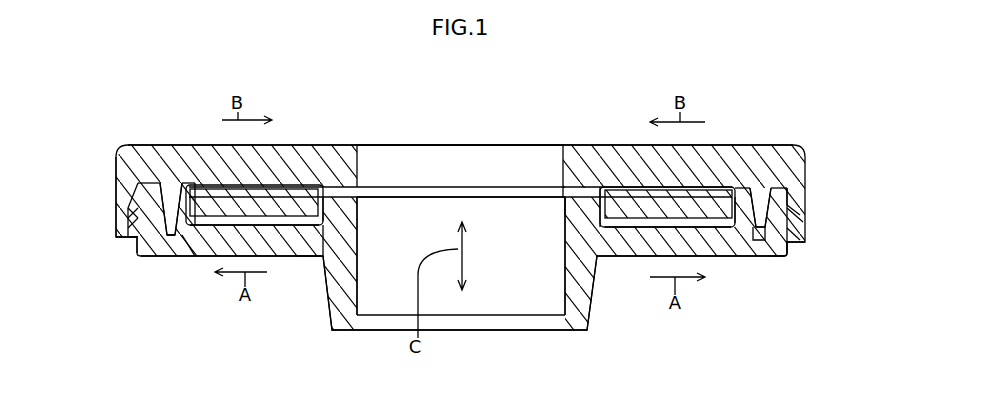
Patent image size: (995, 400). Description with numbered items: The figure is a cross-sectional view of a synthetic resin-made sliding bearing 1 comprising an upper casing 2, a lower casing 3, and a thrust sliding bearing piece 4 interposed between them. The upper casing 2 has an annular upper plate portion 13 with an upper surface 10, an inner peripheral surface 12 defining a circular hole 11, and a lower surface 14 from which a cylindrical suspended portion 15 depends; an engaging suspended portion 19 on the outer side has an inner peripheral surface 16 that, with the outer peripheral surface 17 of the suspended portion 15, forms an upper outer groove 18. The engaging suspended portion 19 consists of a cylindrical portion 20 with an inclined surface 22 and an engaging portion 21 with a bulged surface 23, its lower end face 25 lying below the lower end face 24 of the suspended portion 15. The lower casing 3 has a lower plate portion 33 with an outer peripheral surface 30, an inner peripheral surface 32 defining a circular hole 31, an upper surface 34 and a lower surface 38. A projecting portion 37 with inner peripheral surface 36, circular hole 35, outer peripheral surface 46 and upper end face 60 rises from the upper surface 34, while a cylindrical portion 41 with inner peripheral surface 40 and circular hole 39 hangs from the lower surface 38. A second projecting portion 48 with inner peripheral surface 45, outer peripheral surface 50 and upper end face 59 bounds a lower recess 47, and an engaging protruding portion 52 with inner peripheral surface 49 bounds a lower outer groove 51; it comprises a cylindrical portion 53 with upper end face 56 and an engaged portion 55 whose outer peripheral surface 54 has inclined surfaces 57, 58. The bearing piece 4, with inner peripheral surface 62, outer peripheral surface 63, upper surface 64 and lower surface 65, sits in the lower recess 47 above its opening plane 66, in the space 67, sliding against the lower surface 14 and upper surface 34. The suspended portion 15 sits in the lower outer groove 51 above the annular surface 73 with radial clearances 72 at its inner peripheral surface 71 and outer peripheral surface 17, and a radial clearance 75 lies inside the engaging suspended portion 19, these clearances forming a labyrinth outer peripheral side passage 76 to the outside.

The synthetic resin-made sliding bearing 1 is at (795, 128).
The upper casing 2 is at (605, 148).
The lower casing 3 is at (285, 262).
The thrust sliding bearing piece 4 is at (645, 230).
The annular upper surface 10 is at (563, 180).
The circular hole 11 is at (463, 155).
The inner peripheral surface 12 is at (545, 172).
The annular upper plate portion 13 is at (585, 170).
The annular lower surface 14 is at (658, 193).
The suspended portion 15 is at (760, 190).
The inner peripheral surface 16 is at (800, 217).
The outer peripheral surface 17 is at (782, 192).
The annular upper outer groove 18 is at (773, 190).
The engaging suspended portion 19 is at (787, 190).
The cylindrical portion 20 is at (122, 197).
The engaging portion 21 is at (125, 238).
The inclined surface 22 is at (135, 190).
The bulged surface 23 is at (793, 235).
The lower end face 24 is at (768, 225).
The lower end face 25 is at (790, 245).
The outer peripheral surface 30 is at (785, 247).
The circular hole 31 is at (485, 245).
The inner peripheral surface 32 is at (560, 235).
The annular lower plate portion 33 is at (210, 242).
The annular upper surface 34 is at (270, 210).
The circular hole 35 is at (487, 215).
The inner peripheral surface 36 is at (360, 215).
The projecting portion 37 is at (340, 213).
The annular lower surface 38 is at (307, 258).
The circular hole 39 is at (497, 290).
The inner peripheral surface 40 is at (358, 290).
The cylindrical portion 41 is at (327, 290).
The inner peripheral surface 45 is at (198, 195).
The outer peripheral surface 46 is at (305, 192).
The lower recess 47 is at (320, 196).
The projecting portion 48 is at (172, 190).
The inner peripheral surface 49 is at (155, 237).
The outer peripheral surface 50 is at (157, 195).
The lower outer groove 51 is at (172, 220).
The engaging protruding portion 52 is at (133, 180).
The cylindrical portion 53 is at (790, 247).
The outer peripheral surface 54 is at (138, 203).
The engaged portion 55 is at (133, 215).
The upper end face 56 is at (138, 190).
The inclined surface 57 is at (123, 213).
The inclined surface 58 is at (138, 240).
The upper end face 59 is at (180, 190).
The upper end face 60 is at (438, 193).
The inner peripheral surface 62 is at (617, 220).
The outer peripheral surface 63 is at (745, 223).
The annular upper surface 64 is at (242, 222).
The annular lower surface 65 is at (638, 227).
The opening plane 66 is at (553, 170).
The space 67 is at (737, 190).
The inner peripheral surface 71 is at (745, 200).
The radial clearances 72 is at (742, 190).
The annular surface 73 is at (153, 235).
The radial clearance 75 is at (793, 203).
The outer peripheral side passage 76 is at (790, 183).